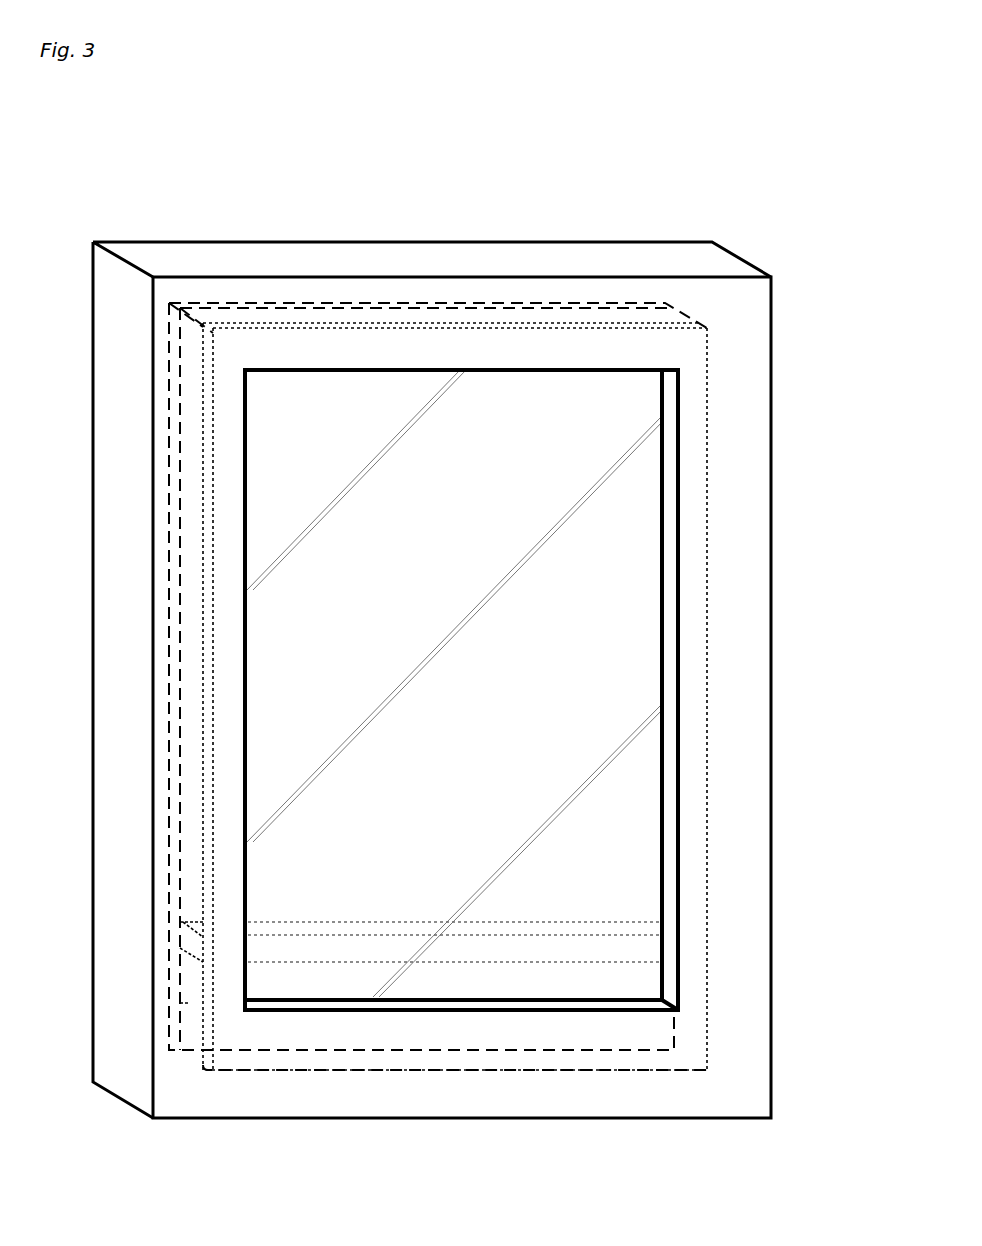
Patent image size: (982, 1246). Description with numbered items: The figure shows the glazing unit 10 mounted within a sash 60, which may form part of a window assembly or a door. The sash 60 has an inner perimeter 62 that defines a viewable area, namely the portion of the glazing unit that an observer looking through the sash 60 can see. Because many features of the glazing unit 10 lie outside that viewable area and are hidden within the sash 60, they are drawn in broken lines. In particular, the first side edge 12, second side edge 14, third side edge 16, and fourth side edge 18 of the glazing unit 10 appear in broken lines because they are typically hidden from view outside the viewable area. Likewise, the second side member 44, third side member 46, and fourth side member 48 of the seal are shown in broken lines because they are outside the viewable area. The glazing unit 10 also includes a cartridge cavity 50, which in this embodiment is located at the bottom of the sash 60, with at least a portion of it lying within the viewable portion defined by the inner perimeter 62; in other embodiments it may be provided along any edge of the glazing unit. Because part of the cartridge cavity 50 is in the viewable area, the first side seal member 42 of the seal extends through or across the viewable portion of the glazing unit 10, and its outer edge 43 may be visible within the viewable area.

The glazing unit 10 is at (483, 447).
The first side edge 12 is at (380, 1070).
The second side edge 14 is at (166, 622).
The third side edge 16 is at (707, 570).
The fourth side edge 18 is at (423, 303).
The first side seal member 42 is at (590, 947).
The outer edge 43 is at (495, 962).
The second side member 44 is at (190, 742).
The third side member 46 is at (698, 650).
The fourth side member 48 is at (343, 317).
The cartridge cavity 50 is at (195, 1003).
The sash 60 is at (755, 430).
The inner perimeter 62 is at (593, 1000).